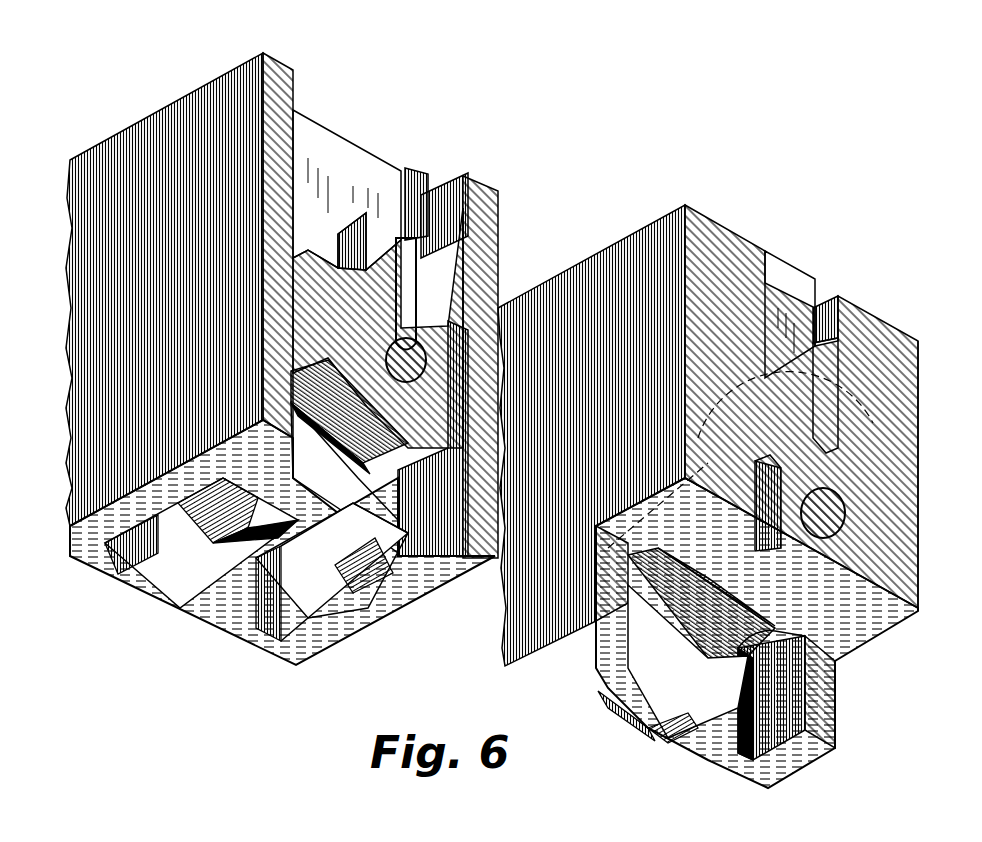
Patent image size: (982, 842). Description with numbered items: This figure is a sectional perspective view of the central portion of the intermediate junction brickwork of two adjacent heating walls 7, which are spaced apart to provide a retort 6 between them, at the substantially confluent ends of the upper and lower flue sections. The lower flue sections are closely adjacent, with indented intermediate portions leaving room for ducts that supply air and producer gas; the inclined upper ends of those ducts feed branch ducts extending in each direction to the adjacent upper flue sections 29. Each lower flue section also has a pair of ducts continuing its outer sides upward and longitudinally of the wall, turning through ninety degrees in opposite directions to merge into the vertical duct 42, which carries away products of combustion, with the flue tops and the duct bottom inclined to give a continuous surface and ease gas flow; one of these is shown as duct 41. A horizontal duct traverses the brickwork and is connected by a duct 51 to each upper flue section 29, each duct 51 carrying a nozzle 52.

The retort 6 is at (515, 217).
The heating wall 7 is at (210, 82).
The upper flue section 29 is at (338, 145).
The duct 41 is at (455, 352).
The vertical duct 42 is at (787, 300).
The duct 51 is at (397, 233).
The nozzle 52 is at (445, 260).